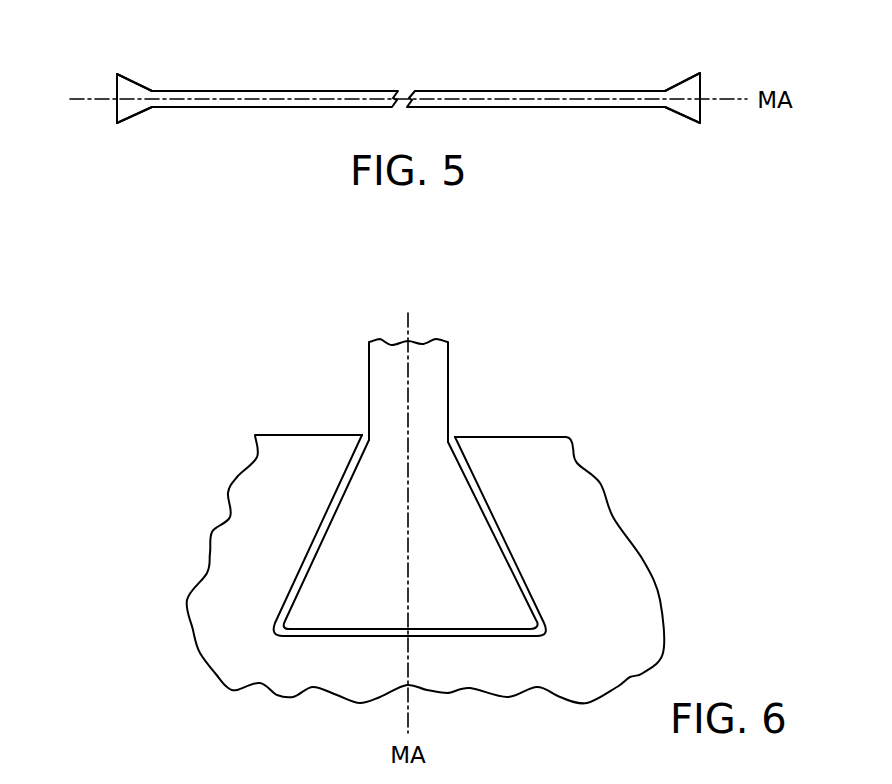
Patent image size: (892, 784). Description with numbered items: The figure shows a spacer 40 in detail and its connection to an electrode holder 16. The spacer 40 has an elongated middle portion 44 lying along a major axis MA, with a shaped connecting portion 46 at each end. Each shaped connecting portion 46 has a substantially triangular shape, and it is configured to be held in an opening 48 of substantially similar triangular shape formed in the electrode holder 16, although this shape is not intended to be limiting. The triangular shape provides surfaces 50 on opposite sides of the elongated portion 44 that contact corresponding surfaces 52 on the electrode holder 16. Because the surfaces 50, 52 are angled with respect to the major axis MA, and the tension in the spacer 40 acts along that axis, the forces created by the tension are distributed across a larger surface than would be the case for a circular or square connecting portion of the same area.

In FIG. 6, the electrode holder 16 is at (622, 548).
In FIG. 5, the spacer 40 is at (130, 60).
In FIG. 5, the elongated middle portion 44 is at (475, 92).
In FIG. 6, the elongated middle portion 44 is at (432, 393).
In FIG. 5, the shaped connecting portion 46 is at (124, 108).
In FIG. 6, the shaped connecting portion 46 is at (437, 568).
In FIG. 6, the opening 48 is at (572, 590).
In FIG. 5, the surfaces 50 is at (138, 82).
In FIG. 6, the surfaces 50 is at (500, 530).
In FIG. 6, the corresponding surfaces 52 is at (488, 502).